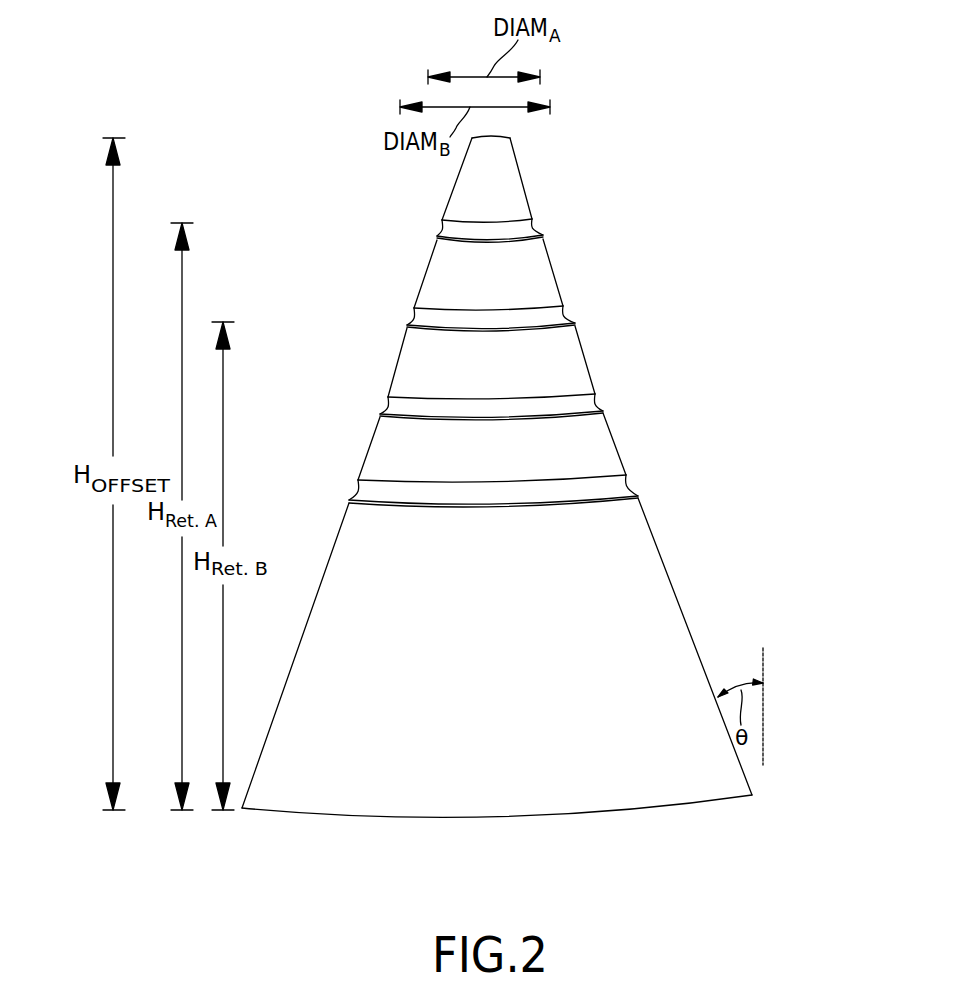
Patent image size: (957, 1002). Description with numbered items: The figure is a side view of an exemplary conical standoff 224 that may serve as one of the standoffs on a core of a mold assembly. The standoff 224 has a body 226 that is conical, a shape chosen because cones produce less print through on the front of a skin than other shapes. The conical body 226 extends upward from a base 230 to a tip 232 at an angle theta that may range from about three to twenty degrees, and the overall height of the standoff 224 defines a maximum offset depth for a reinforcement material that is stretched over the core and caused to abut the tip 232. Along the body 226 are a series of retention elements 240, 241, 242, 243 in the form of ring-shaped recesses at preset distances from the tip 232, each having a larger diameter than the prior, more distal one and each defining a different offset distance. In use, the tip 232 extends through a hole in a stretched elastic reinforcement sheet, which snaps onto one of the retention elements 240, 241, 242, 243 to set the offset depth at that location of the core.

The standoff 224 is at (736, 226).
The body 226 is at (693, 638).
The base 230 is at (753, 794).
The tip 232 is at (510, 137).
The retention element 240 is at (542, 237).
The retention element 241 is at (573, 324).
The retention element 242 is at (601, 407).
The retention element 243 is at (625, 490).